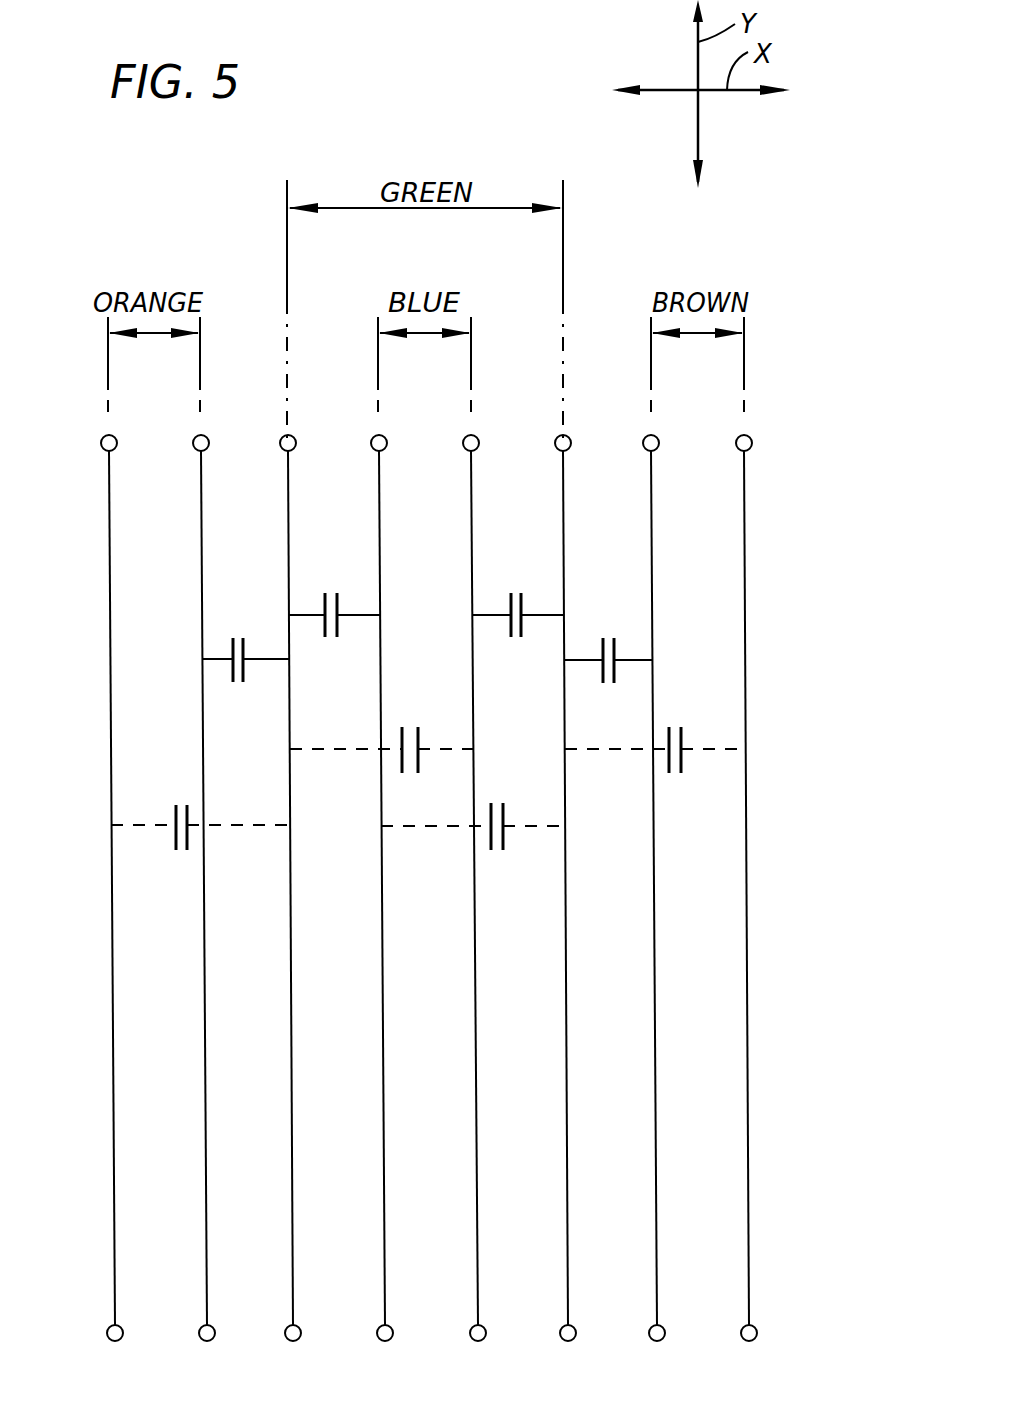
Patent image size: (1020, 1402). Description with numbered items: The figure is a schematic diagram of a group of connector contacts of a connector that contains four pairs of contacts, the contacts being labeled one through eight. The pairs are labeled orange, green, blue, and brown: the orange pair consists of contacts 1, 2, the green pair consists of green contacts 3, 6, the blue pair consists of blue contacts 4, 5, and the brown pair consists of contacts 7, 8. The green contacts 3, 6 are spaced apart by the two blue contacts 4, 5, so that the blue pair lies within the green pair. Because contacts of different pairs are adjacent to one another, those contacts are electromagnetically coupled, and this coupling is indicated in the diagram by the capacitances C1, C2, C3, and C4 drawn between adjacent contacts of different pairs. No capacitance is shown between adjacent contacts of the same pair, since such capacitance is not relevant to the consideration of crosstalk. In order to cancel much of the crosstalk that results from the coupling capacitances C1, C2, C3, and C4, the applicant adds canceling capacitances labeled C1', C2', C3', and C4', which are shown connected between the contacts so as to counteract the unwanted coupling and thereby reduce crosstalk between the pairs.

The contact 1 is at (119, 884).
The contact 2 is at (210, 884).
The green contact 3 is at (297, 884).
The blue contact 4 is at (388, 884).
The blue contact 5 is at (480, 884).
The green contact 6 is at (572, 884).
The contact 7 is at (660, 884).
The contact 8 is at (753, 884).
The capacitance C1 is at (334, 596).
The capacitance C2 is at (518, 598).
The capacitance C3 is at (245, 643).
The capacitance C4 is at (608, 643).
The canceling capacitance C1' is at (382, 730).
The canceling capacitance C2' is at (473, 808).
The canceling capacitance C3' is at (200, 805).
The canceling capacitance C4' is at (655, 730).